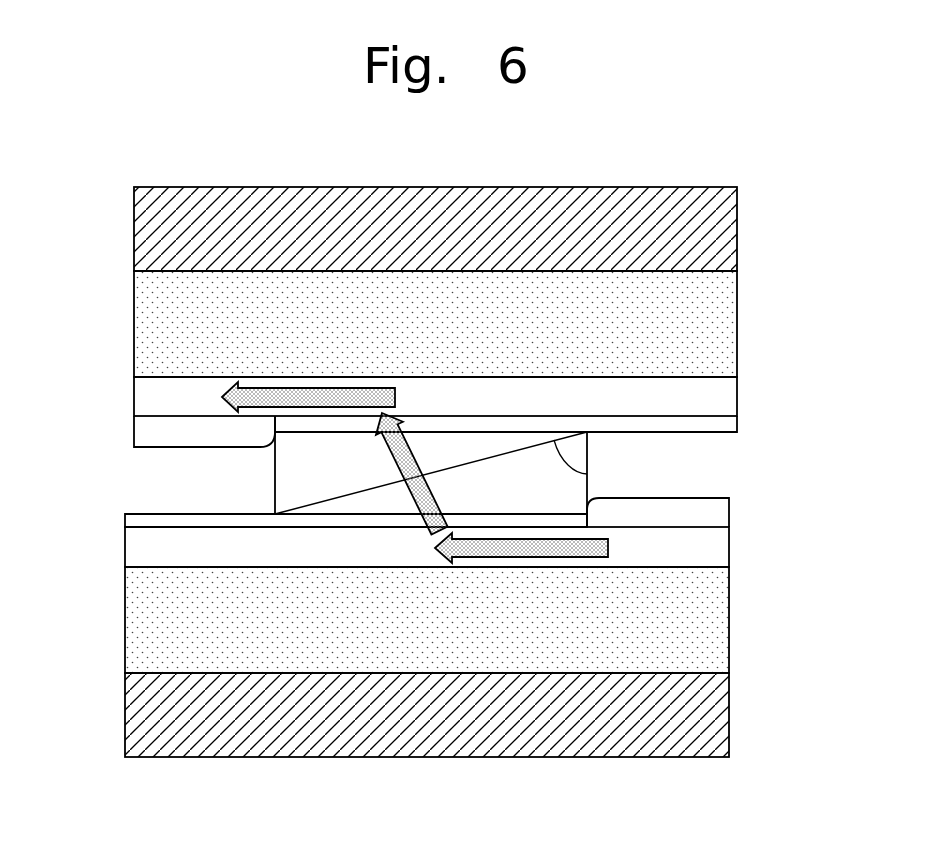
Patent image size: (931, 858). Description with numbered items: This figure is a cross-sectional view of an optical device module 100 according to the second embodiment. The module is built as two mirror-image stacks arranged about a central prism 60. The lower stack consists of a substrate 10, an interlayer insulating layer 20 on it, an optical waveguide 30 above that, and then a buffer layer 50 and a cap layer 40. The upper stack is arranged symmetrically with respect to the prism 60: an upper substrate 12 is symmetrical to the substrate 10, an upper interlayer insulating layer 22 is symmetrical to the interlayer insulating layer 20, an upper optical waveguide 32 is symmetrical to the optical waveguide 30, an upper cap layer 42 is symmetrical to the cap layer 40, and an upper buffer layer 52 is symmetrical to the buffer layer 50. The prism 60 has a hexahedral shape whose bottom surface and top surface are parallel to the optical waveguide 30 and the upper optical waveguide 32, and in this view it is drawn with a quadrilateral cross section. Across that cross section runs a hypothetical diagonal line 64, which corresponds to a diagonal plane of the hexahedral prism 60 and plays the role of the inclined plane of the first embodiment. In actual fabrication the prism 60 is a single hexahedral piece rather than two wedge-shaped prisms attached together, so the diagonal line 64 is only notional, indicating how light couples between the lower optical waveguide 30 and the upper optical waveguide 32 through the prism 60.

The optical device module 100 is at (782, 137).
The upper substrate 12 is at (730, 224).
The upper interlayer insulating layer 22 is at (730, 320).
The upper optical waveguide 32 is at (730, 391).
The upper buffer layer 52 is at (730, 423).
The upper cap layer 42 is at (143, 433).
The prism 60 is at (288, 472).
The diagonal line 64 is at (587, 474).
The cap layer 40 is at (722, 511).
The buffer layer 50 is at (128, 520).
The optical waveguide 30 is at (722, 545).
The interlayer insulating layer 20 is at (722, 610).
The substrate 10 is at (722, 714).